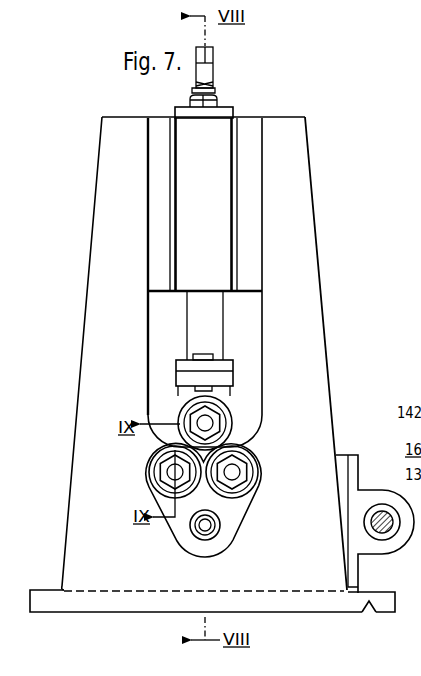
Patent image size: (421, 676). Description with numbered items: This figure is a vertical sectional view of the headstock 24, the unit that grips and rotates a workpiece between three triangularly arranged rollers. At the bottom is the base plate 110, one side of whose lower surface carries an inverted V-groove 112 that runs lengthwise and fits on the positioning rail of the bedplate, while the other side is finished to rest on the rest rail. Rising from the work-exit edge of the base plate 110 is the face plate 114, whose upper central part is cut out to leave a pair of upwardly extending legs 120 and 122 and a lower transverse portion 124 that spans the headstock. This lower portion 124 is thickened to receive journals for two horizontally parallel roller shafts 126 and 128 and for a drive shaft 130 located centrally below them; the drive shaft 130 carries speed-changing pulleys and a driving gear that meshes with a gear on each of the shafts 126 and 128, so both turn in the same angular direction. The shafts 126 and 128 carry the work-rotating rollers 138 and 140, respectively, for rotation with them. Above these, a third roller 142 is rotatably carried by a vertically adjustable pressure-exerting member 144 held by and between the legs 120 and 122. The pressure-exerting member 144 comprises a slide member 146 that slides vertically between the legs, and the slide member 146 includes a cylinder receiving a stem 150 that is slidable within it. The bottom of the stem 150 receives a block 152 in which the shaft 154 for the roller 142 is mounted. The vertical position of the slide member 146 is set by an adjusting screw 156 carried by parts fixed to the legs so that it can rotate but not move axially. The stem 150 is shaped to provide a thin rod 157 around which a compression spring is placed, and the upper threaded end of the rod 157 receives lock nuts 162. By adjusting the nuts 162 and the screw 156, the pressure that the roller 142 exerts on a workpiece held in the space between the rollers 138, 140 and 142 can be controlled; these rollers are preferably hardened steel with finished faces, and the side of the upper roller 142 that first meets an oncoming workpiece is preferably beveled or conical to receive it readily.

The headstock 24 is at (83, 215).
The base plate 110 is at (155, 603).
The inverted V-groove 112 is at (373, 609).
The face plate 114 is at (123, 565).
The leg 120 is at (92, 266).
The leg 122 is at (315, 288).
The lower transverse portion 124 is at (331, 562).
The roller shaft 126 is at (150, 487).
The roller shaft 128 is at (238, 472).
The drive shaft 130 is at (207, 533).
The work-rotating roller 138 is at (155, 456).
The work-rotating roller 140 is at (253, 453).
The third roller 142 is at (178, 416).
The pressure-exerting member 144 is at (277, 99).
The slide member 146 is at (218, 239).
The stem 150 is at (193, 333).
The block 152 is at (233, 402).
The shaft 154 is at (213, 423).
The adjusting screw 156 is at (209, 63).
The thin rod 157 is at (208, 84).
The lock nuts 162 is at (190, 106).